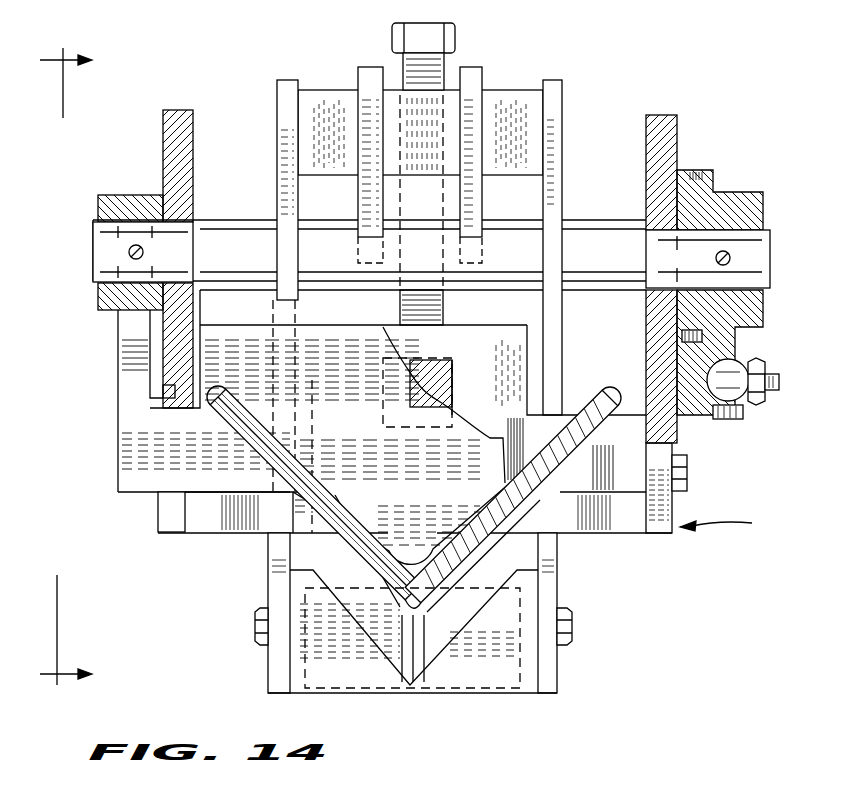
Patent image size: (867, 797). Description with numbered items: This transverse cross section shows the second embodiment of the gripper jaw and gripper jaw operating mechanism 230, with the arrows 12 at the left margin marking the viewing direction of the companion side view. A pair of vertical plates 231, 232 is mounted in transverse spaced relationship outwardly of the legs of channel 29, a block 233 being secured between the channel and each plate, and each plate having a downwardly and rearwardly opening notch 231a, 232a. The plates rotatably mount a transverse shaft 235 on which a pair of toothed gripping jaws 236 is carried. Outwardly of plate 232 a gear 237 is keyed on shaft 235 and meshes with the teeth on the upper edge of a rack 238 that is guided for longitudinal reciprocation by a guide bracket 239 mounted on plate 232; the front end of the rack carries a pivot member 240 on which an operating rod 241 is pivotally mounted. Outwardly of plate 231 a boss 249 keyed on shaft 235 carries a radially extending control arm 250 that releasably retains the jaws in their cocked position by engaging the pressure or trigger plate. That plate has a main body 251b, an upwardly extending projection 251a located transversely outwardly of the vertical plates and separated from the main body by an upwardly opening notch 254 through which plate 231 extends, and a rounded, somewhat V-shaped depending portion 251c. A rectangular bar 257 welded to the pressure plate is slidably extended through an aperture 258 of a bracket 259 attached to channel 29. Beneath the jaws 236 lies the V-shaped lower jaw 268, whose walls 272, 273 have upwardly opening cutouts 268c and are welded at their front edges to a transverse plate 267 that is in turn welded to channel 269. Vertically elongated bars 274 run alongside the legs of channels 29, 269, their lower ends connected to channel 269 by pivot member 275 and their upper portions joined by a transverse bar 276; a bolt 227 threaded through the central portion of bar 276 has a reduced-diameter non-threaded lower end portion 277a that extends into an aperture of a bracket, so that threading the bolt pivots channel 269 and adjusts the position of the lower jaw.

The section line 12- 12 is at (105, 370).
The bolt 227 is at (456, 30).
The vertically elongated bars 274 is at (287, 80).
The toothed gripping jaws 236 is at (370, 67).
The transversely extending bar 276 is at (528, 92).
The vertical plate 231 is at (183, 113).
The vertical plate 232 is at (668, 118).
The control arm 250 is at (118, 197).
The boss 249 is at (100, 210).
The gear 237 is at (750, 192).
The transverse shaft 235 is at (600, 230).
The guide bracket 239 is at (740, 268).
The main body of the pressure plate 251b is at (325, 336).
The bracket 259 is at (523, 328).
The rectangular bar 257 is at (443, 362).
The rack 238 is at (682, 352).
The pivot member 240 is at (760, 362).
The aperture 258 is at (500, 387).
The upwardly extending projection 251a is at (118, 363).
The reduced diameter non-threaded lower end portion 277a is at (398, 330).
The wall of lower jaw 273 is at (600, 395).
The wall of lower jaw 272 is at (216, 388).
The channel 29 is at (313, 440).
The upwardly opening notch 254 is at (160, 388).
The notch 231a is at (165, 383).
The operating rod 241 is at (735, 417).
The notch 232a is at (668, 443).
The depending portion of pressure plate 251c is at (412, 518).
The cutouts 268c is at (530, 490).
The gripper jaw and gripper jaw operating mechanism 230 is at (737, 524).
The block 233 is at (240, 515).
The pivot member 275 is at (255, 630).
The lower jaw 268 is at (392, 628).
The channel 269 is at (575, 668).
The transverse plate 267 is at (455, 695).